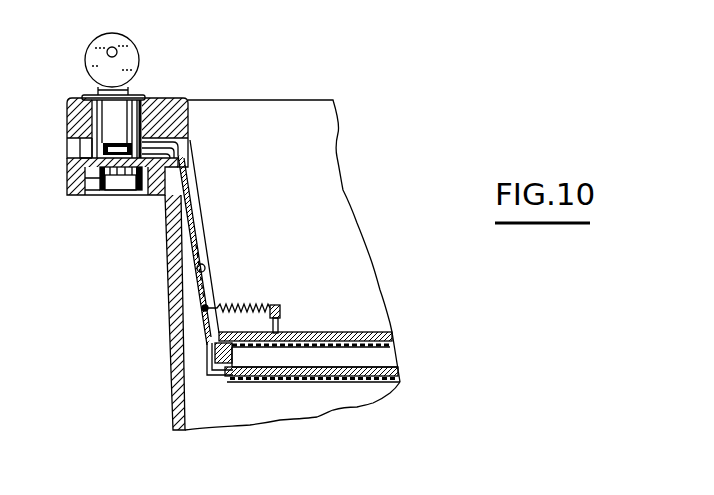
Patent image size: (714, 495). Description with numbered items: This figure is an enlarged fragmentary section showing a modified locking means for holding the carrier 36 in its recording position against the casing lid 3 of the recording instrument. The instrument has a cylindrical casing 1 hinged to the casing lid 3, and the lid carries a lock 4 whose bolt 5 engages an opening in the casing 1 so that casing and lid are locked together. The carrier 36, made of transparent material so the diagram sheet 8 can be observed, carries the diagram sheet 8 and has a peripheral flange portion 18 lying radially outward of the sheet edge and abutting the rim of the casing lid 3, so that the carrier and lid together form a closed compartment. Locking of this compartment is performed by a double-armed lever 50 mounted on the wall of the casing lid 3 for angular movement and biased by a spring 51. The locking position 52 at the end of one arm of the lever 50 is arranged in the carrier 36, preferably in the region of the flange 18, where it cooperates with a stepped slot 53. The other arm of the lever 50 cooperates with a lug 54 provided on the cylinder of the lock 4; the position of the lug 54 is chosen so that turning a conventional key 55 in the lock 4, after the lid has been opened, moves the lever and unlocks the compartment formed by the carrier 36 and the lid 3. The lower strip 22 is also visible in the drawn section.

The cylindrical casing 1 is at (168, 288).
The casing lid 3 is at (325, 120).
The lock 4 is at (137, 97).
The bolt 5 is at (133, 188).
The diagram sheet 8 is at (390, 344).
The peripheral flange portion 18 is at (233, 352).
The lower strip 22 is at (328, 380).
The carrier 36 is at (398, 373).
The double-armed lever 50 is at (200, 213).
The spring 51 is at (251, 307).
The locking position 52 is at (207, 368).
The stepped slot 53 is at (223, 382).
The lug 54 is at (117, 142).
The key 55 is at (127, 43).